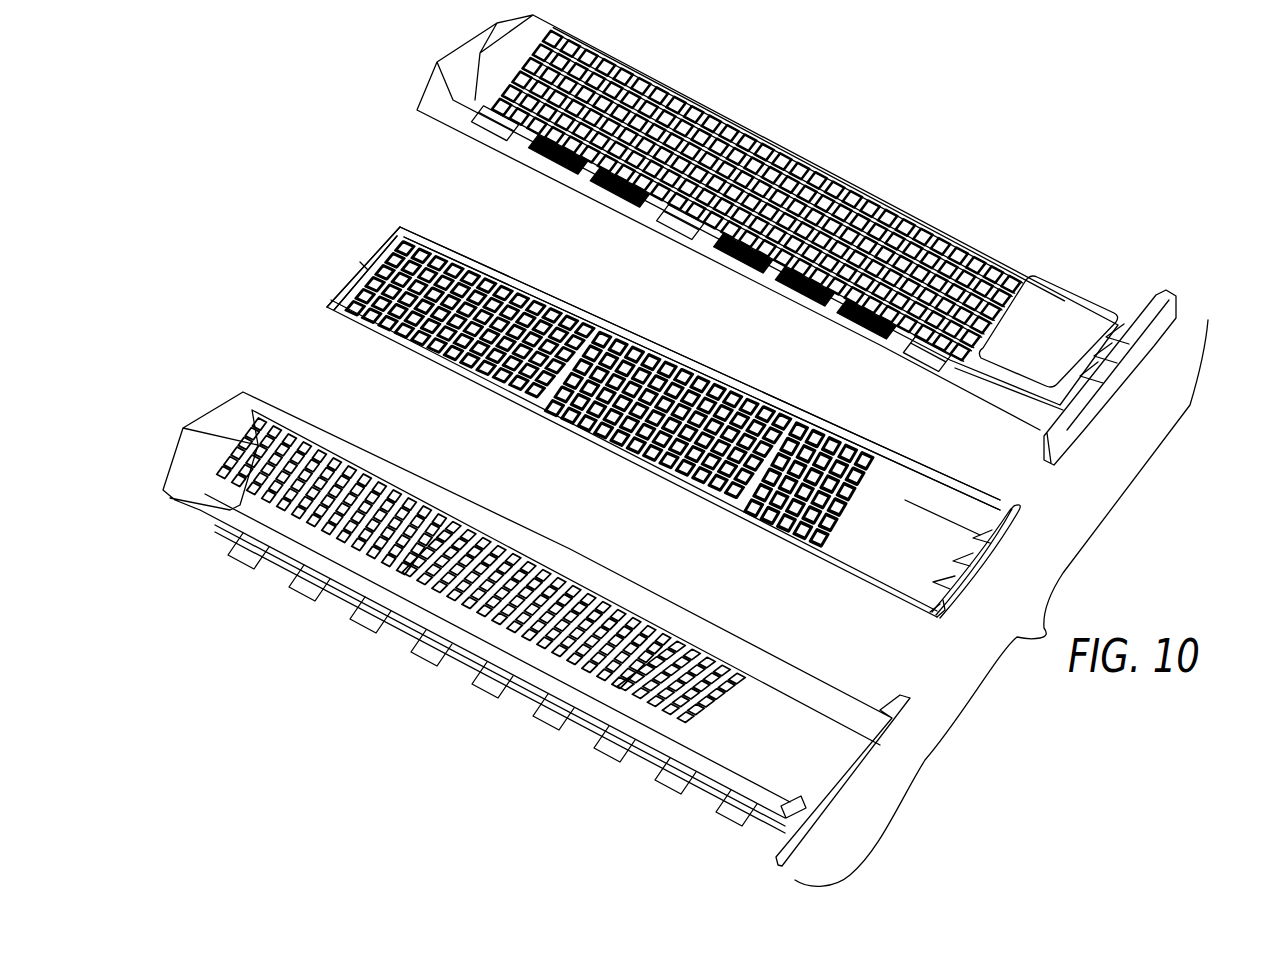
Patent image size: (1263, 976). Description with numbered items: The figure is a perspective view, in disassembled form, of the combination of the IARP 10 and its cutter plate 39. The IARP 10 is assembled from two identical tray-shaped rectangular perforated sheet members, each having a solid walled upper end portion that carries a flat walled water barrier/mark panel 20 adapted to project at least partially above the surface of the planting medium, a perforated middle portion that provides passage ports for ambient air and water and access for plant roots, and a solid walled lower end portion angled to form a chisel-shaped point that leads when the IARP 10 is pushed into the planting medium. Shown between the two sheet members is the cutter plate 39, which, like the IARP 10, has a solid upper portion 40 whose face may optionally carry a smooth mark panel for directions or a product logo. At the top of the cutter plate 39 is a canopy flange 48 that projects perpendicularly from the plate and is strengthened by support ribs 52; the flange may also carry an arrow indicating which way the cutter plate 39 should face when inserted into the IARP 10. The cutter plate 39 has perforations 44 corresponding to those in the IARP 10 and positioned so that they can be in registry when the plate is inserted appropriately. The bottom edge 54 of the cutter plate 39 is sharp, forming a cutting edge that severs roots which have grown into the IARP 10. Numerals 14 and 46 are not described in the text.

The IARP 10 is at (903, 193).
The end wall 14 is at (1170, 306).
The water barrier/mark panel 20 is at (1048, 331).
The cutter plate 39 is at (685, 418).
The solid upper portion 40 is at (905, 503).
The perforations 44 is at (548, 300).
The side rail 46 is at (452, 249).
The canopy flange 48 is at (968, 572).
The support ribs 52 is at (932, 600).
The bottom edge 54 is at (362, 266).